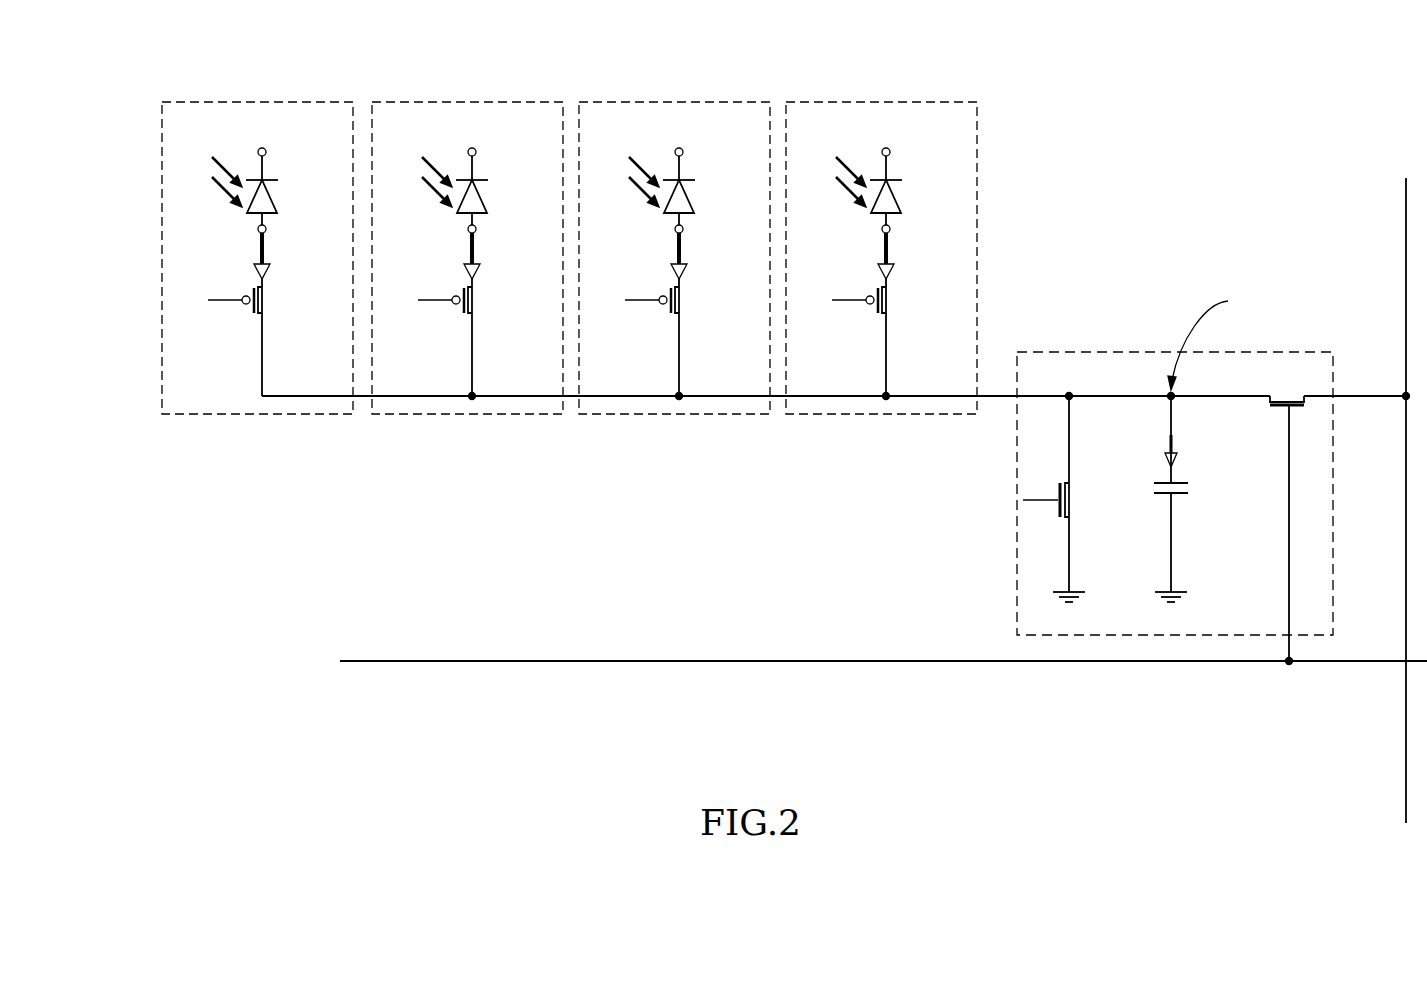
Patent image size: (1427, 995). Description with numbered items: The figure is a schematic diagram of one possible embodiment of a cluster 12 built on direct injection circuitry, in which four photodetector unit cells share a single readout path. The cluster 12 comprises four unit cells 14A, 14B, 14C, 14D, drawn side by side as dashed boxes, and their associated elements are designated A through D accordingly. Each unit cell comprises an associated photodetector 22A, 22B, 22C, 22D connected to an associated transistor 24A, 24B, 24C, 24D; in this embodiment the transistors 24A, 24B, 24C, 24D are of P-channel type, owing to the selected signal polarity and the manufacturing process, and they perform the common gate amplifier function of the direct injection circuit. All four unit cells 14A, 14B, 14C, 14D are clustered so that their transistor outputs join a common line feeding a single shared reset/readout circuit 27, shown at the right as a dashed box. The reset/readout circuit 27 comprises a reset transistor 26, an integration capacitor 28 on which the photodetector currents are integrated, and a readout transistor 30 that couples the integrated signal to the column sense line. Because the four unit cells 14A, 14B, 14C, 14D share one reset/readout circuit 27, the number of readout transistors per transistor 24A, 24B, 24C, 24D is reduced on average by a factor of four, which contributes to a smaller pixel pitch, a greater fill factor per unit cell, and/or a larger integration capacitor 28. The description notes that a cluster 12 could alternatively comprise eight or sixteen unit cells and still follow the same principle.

The cluster 12 is at (582, 724).
The unit cell 14A is at (258, 102).
The unit cell 14B is at (467, 230).
The unit cell 14C is at (674, 230).
The unit cell 14D is at (881, 230).
The photodetector 22A is at (275, 198).
The photodetector 22B is at (482, 182).
The photodetector 22C is at (689, 182).
The photodetector 22D is at (897, 182).
The transistor 24A is at (235, 314).
The transistor 24B is at (445, 316).
The transistor 24C is at (652, 316).
The transistor 24D is at (860, 316).
The reset transistor 26 is at (1036, 484).
The reset/readout circuit 27 is at (1017, 592).
The integration capacitor 28 is at (1196, 446).
The readout transistor 30 is at (1289, 515).